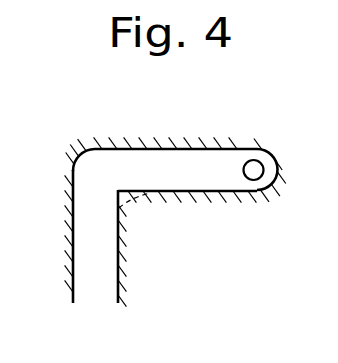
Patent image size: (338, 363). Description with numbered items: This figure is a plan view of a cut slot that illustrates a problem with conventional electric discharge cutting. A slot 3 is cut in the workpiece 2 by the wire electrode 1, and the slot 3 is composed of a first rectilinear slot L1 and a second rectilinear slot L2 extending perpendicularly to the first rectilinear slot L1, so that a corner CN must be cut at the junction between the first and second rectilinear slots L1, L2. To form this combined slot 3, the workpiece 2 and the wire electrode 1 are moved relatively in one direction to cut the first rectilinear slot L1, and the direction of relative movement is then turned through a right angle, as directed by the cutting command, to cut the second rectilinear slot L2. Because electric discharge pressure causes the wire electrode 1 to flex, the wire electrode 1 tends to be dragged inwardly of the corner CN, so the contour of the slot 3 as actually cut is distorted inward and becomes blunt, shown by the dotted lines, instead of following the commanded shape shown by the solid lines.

The corner CN is at (93, 158).
The first rectilinear slot L1 is at (80, 257).
The second rectilinear slot L2 is at (170, 147).
The wire electrode 1 is at (253, 168).
The workpiece 2 is at (118, 245).
The slot 3 is at (212, 186).